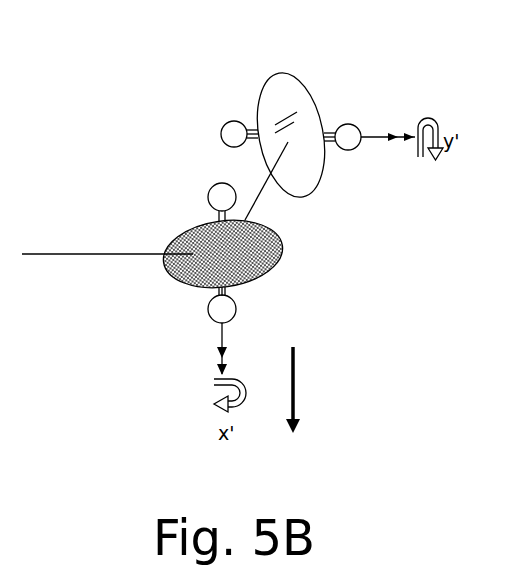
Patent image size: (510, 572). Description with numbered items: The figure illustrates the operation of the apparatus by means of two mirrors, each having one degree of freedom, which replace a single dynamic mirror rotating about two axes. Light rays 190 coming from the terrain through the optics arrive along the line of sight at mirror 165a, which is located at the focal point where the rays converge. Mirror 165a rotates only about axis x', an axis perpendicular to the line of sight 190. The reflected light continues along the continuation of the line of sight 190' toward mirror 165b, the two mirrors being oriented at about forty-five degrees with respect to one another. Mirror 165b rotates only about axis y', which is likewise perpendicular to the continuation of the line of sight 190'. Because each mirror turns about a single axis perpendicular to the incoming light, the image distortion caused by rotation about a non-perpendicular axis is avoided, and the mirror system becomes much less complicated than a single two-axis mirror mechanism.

The mirror 165a is at (176, 287).
The mirror 165b is at (303, 90).
The light rays 190 is at (107, 226).
The continuation of the line of sight 190' is at (222, 181).